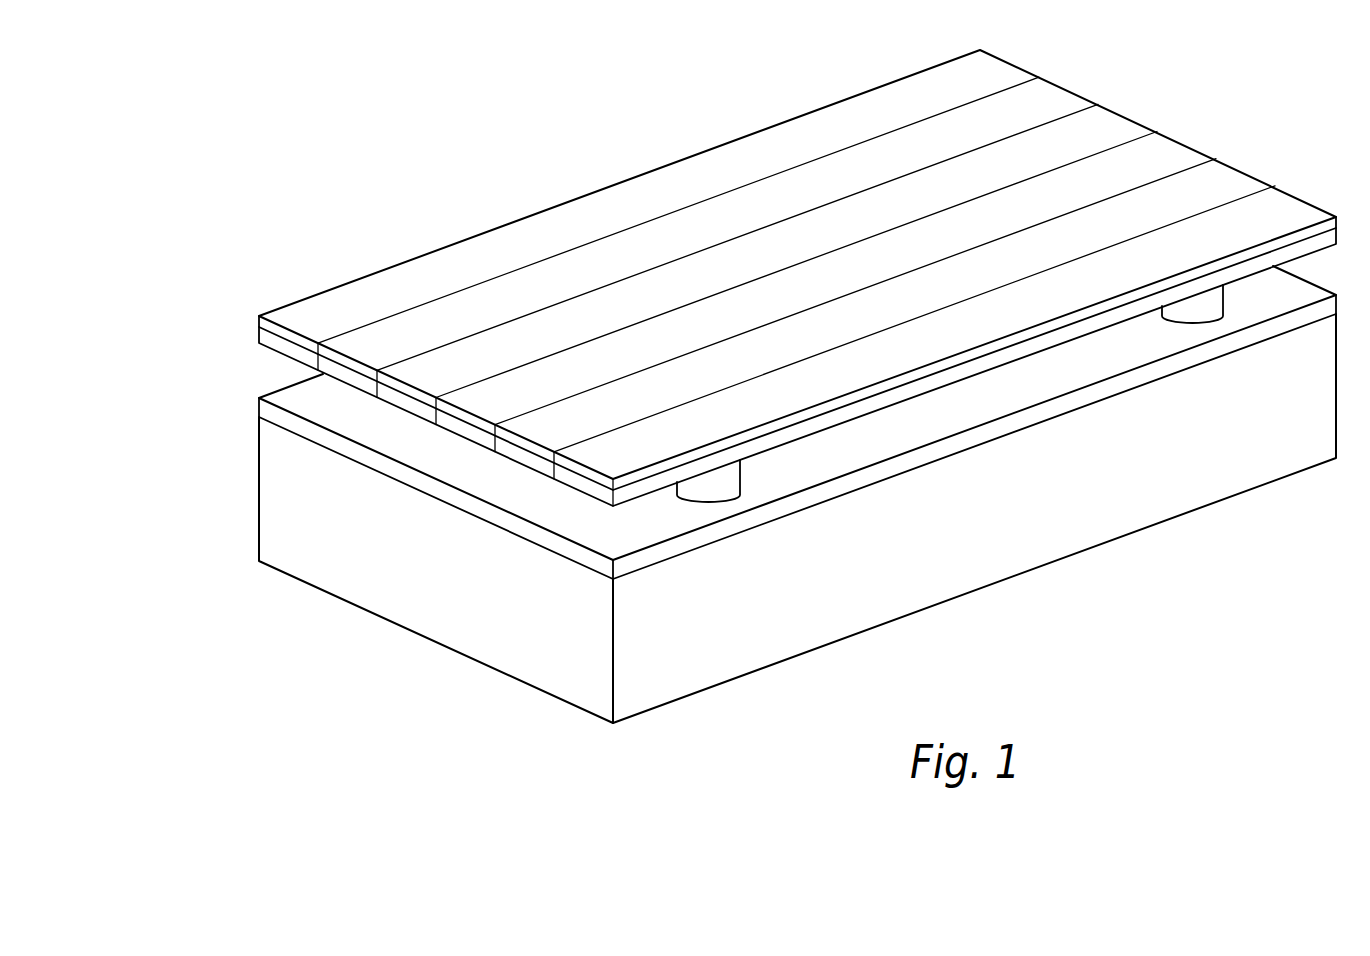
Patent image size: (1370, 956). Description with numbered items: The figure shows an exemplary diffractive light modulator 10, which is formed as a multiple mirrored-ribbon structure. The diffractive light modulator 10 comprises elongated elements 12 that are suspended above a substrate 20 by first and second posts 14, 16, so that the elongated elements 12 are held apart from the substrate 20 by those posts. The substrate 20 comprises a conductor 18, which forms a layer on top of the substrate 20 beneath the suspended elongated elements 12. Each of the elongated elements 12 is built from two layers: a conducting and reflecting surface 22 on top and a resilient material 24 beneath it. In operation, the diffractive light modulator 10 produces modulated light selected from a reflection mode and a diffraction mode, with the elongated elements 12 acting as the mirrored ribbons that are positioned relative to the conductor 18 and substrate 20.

The diffractive light modulator 10 is at (262, 284).
The elongated elements 12 is at (515, 303).
The first post 14 is at (713, 487).
The second post 16 is at (1201, 310).
The conductor 18 is at (1013, 424).
The substrate 20 is at (1010, 527).
The conducting and reflecting surface 22 is at (250, 313).
The resilient material 24 is at (248, 335).